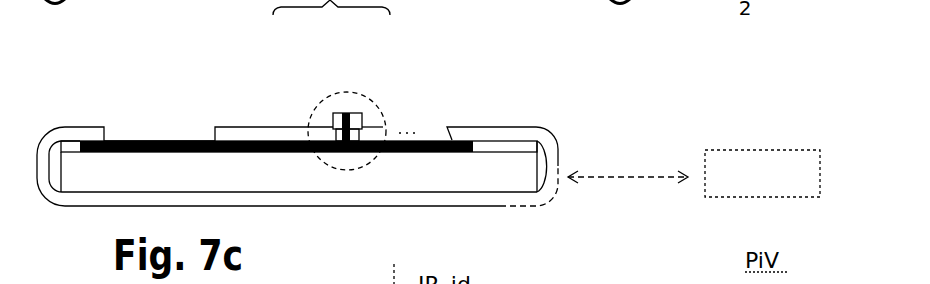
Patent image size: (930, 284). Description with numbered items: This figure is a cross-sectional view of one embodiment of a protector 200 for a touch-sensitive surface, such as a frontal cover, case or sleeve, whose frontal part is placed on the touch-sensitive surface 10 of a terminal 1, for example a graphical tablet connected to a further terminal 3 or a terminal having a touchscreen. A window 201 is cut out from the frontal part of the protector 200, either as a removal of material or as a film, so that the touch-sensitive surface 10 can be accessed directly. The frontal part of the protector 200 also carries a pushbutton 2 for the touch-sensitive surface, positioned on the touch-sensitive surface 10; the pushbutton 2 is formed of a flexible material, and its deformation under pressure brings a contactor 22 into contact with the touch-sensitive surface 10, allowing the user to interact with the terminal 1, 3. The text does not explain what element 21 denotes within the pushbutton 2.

The protector 200 is at (40, 172).
The window 201 is at (102, 118).
The pushbutton 2 is at (305, 95).
The contactor 22 is at (339, 106).
The electronic chip 21 is at (368, 110).
The touch-sensitive surface 10 is at (466, 132).
The terminal 1 is at (532, 166).
The terminal 3 is at (694, 173).